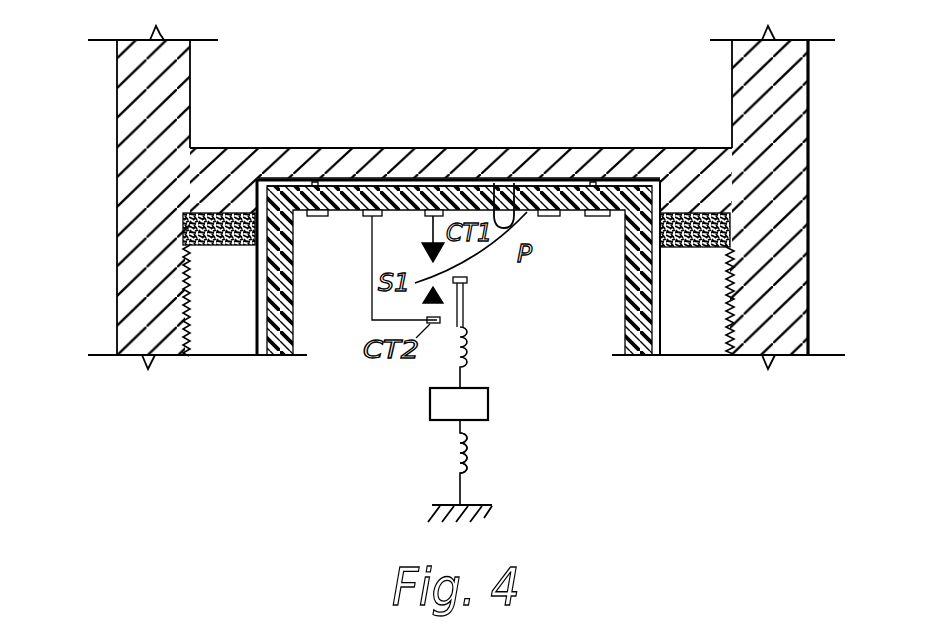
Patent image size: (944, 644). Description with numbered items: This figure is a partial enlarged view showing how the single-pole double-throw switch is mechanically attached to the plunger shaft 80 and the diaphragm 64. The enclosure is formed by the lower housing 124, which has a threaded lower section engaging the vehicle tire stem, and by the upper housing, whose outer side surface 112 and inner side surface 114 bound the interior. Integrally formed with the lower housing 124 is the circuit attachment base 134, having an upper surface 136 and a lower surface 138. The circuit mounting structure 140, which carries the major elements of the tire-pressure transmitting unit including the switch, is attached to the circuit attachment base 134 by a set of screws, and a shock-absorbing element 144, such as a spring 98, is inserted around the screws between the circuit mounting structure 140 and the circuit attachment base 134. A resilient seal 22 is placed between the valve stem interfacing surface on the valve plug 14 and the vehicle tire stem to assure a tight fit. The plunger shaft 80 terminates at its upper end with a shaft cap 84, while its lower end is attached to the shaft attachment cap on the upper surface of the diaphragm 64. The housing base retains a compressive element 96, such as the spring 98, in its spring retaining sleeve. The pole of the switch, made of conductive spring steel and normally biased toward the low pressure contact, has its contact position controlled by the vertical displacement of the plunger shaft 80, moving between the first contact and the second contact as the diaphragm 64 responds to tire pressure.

The lower housing 124 is at (140, 103).
The outer side surface 112 is at (812, 100).
The inner side surface 114 is at (732, 86).
The circuit attachment base 134 is at (337, 160).
The upper surface 136 is at (270, 148).
The resilient seal 22 is at (185, 228).
The shock-absorbing element 144 is at (592, 180).
The circuit mounting structure 140 is at (410, 184).
The lower surface 138 is at (505, 182).
The shaft cap 84 is at (467, 278).
The plunger shaft 80 is at (463, 310).
The valve plug 14 is at (470, 350).
The diaphragm 64 is at (470, 407).
The compressive element 96 is at (474, 455).
The spring 98 is at (463, 453).